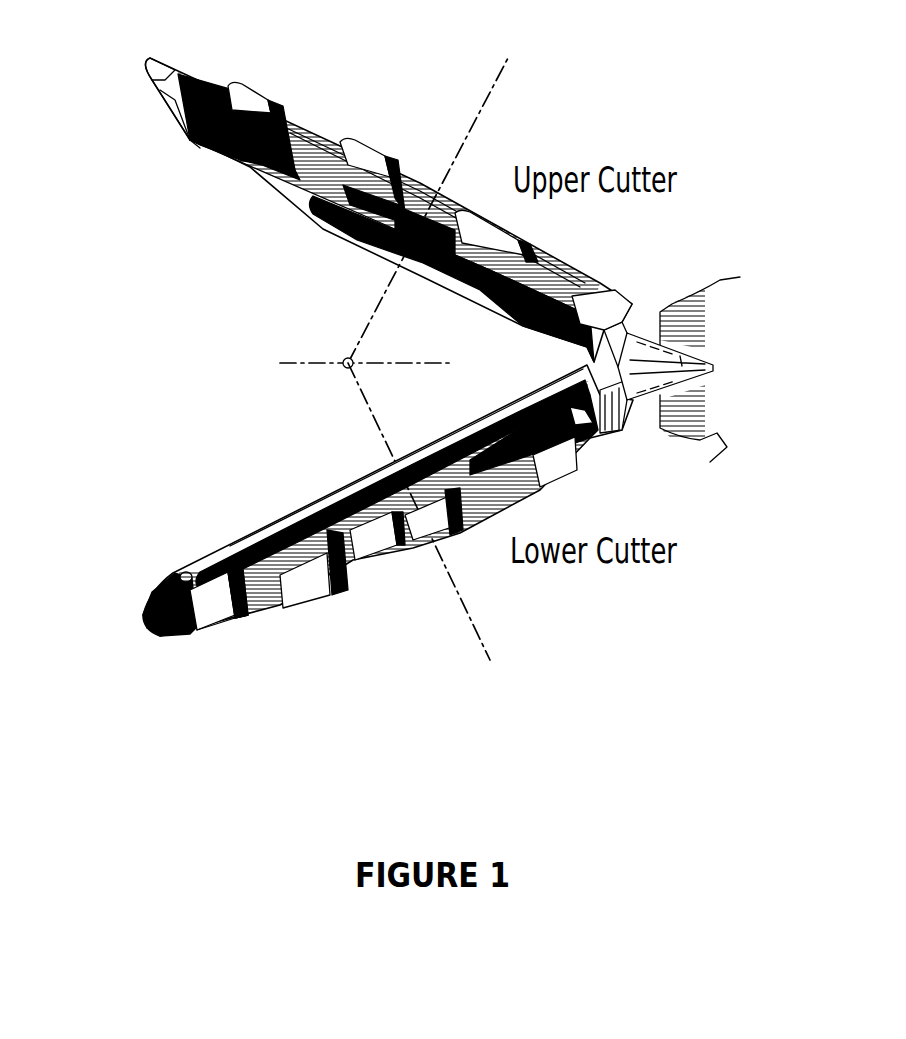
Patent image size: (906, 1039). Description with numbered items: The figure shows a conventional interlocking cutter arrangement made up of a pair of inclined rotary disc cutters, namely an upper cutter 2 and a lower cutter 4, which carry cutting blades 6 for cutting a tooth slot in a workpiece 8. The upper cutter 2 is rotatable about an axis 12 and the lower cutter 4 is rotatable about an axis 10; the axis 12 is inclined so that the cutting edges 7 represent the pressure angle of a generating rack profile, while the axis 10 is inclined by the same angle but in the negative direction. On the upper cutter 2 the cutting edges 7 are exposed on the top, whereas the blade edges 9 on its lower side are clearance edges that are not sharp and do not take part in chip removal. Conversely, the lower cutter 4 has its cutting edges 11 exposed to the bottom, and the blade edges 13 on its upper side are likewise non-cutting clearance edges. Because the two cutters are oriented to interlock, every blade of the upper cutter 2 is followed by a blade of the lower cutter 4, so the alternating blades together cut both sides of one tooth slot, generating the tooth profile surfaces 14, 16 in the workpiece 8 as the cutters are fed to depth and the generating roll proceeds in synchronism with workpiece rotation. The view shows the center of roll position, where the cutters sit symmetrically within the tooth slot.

The upper cutter 2 is at (212, 172).
The lower cutter 4 is at (147, 590).
The cutting blades 6 is at (163, 88).
The cutting edges 7 is at (173, 63).
The workpiece 8 is at (730, 390).
The blade edges 9 is at (167, 100).
The axis 10 is at (370, 410).
The cutting edges 11 is at (228, 630).
The axis 12 is at (378, 303).
The blade edges 13 is at (233, 613).
The tooth profile surface 14 is at (673, 407).
The tooth profile surface 16 is at (672, 310).